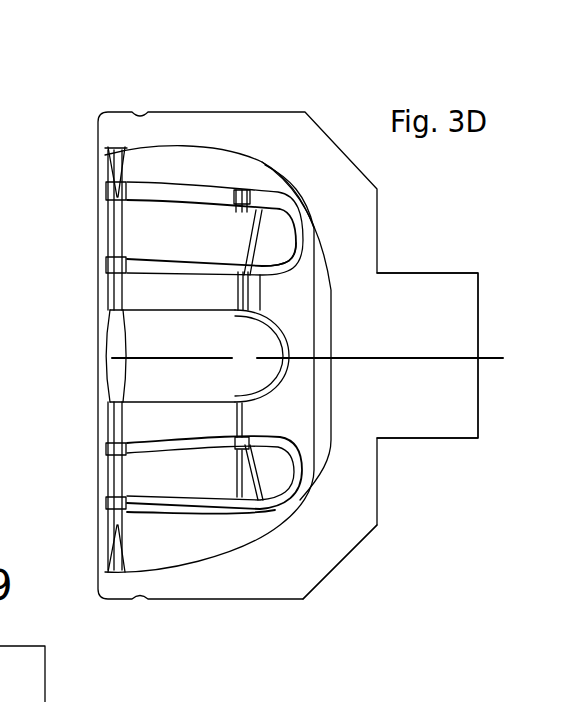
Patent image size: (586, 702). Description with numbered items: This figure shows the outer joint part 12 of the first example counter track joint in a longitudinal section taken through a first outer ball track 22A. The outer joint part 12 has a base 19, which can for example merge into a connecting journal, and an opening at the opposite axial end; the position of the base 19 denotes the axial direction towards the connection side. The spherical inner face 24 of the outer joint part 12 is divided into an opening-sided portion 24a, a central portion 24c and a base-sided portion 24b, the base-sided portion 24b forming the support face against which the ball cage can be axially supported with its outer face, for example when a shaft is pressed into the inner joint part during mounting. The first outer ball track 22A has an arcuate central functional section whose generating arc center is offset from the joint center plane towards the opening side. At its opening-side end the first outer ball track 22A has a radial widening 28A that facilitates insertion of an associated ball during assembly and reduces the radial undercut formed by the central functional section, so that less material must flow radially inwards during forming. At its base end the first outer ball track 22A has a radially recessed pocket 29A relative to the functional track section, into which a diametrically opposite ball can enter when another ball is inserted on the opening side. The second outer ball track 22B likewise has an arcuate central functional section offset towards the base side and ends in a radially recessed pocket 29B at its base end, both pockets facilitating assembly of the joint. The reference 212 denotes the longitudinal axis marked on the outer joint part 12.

The outer joint part 12 is at (180, 106).
The radial widening 28A is at (112, 150).
The first outer ball track 22A is at (194, 165).
The second outer ball track 22B is at (220, 228).
The pocket 29A is at (261, 180).
The pocket 29B is at (286, 237).
The inner face 24 is at (152, 289).
The opening-sided portion 24a is at (132, 428).
The base-sided portion 24b is at (227, 423).
The central portion 24c is at (173, 425).
The base 19 is at (348, 495).
The rectangular tab 212 is at (442, 358).